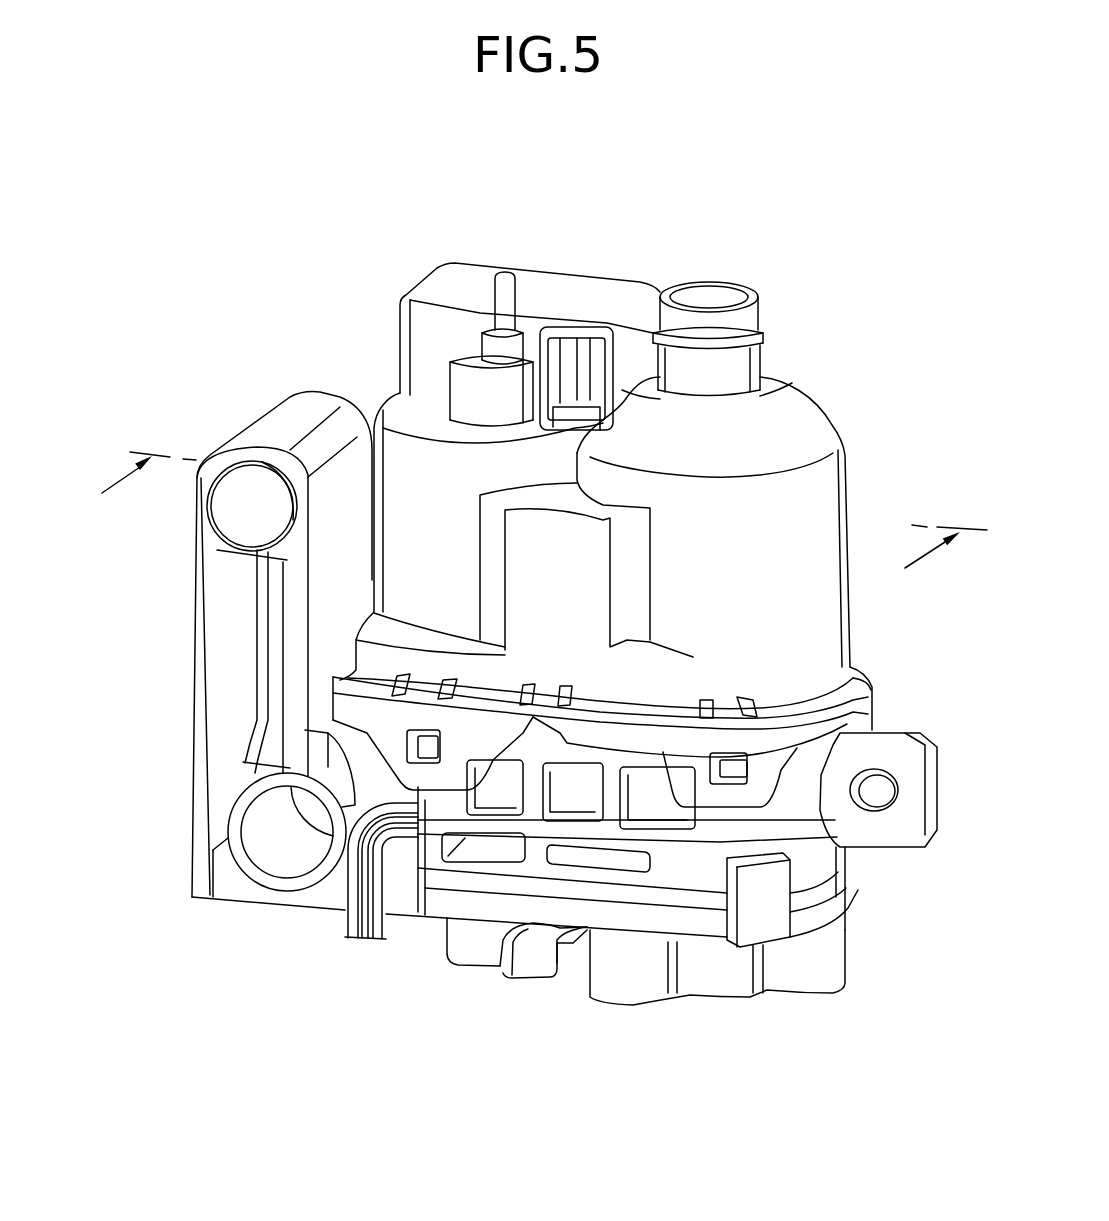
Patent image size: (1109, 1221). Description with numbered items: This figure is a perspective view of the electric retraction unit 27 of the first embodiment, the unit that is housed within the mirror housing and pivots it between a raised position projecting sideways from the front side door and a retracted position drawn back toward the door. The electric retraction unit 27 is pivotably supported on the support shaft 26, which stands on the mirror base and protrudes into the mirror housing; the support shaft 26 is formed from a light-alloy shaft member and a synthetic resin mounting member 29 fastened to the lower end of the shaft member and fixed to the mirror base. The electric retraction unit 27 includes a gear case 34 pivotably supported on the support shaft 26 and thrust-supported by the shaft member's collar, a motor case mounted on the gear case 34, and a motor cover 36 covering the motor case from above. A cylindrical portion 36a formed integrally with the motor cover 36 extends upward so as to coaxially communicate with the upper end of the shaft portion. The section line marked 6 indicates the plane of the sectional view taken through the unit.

The support shaft 26 is at (850, 952).
The electric retraction unit 27 is at (390, 374).
The mounting member 29 is at (640, 988).
The gear case 34 is at (487, 908).
The motor cover 36 is at (817, 521).
The cylindrical portion 36a is at (768, 363).
The section line of FIG. 6 is at (527, 533).